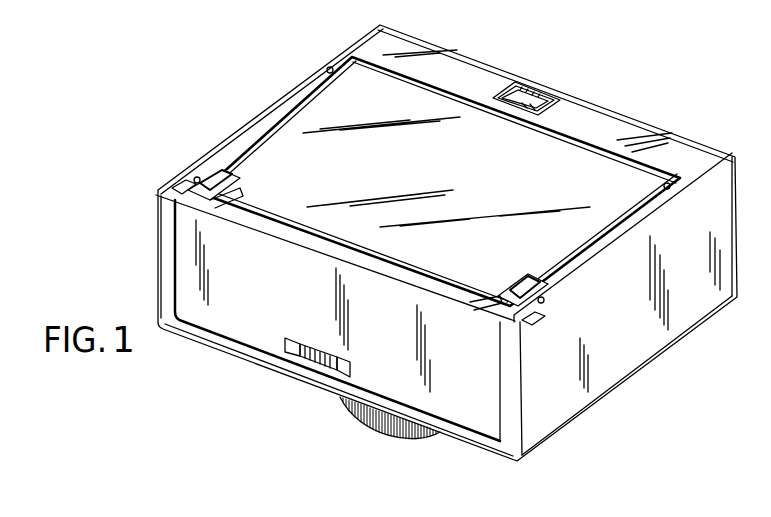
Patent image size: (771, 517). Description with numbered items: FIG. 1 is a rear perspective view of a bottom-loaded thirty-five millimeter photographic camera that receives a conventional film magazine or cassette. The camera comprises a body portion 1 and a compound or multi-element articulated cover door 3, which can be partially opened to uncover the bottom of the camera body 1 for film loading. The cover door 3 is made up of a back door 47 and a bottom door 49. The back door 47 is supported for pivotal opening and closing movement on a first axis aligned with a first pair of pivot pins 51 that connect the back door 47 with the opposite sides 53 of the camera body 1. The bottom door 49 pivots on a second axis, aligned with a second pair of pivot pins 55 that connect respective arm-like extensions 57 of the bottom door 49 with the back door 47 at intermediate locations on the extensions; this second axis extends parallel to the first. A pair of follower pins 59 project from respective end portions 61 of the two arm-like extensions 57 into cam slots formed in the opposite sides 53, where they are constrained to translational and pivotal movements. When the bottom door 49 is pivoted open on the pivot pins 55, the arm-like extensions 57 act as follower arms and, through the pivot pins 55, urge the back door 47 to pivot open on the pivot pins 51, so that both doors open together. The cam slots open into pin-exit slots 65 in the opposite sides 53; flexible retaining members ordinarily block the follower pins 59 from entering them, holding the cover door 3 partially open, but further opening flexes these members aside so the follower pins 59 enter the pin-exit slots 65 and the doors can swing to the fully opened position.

The body portion 1 is at (580, 92).
The cover door 3 is at (556, 165).
The back door 47 is at (463, 203).
The bottom door 49 is at (300, 292).
The first pair of pivot pins 51 is at (332, 70).
The opposite sides 53 is at (290, 90).
The second pair of pivot pins 55 is at (238, 220).
The arm-like extensions 57 is at (228, 196).
The follower pins 59 is at (200, 176).
The end portions 61 is at (234, 178).
The pin-exit slots 65 is at (186, 188).